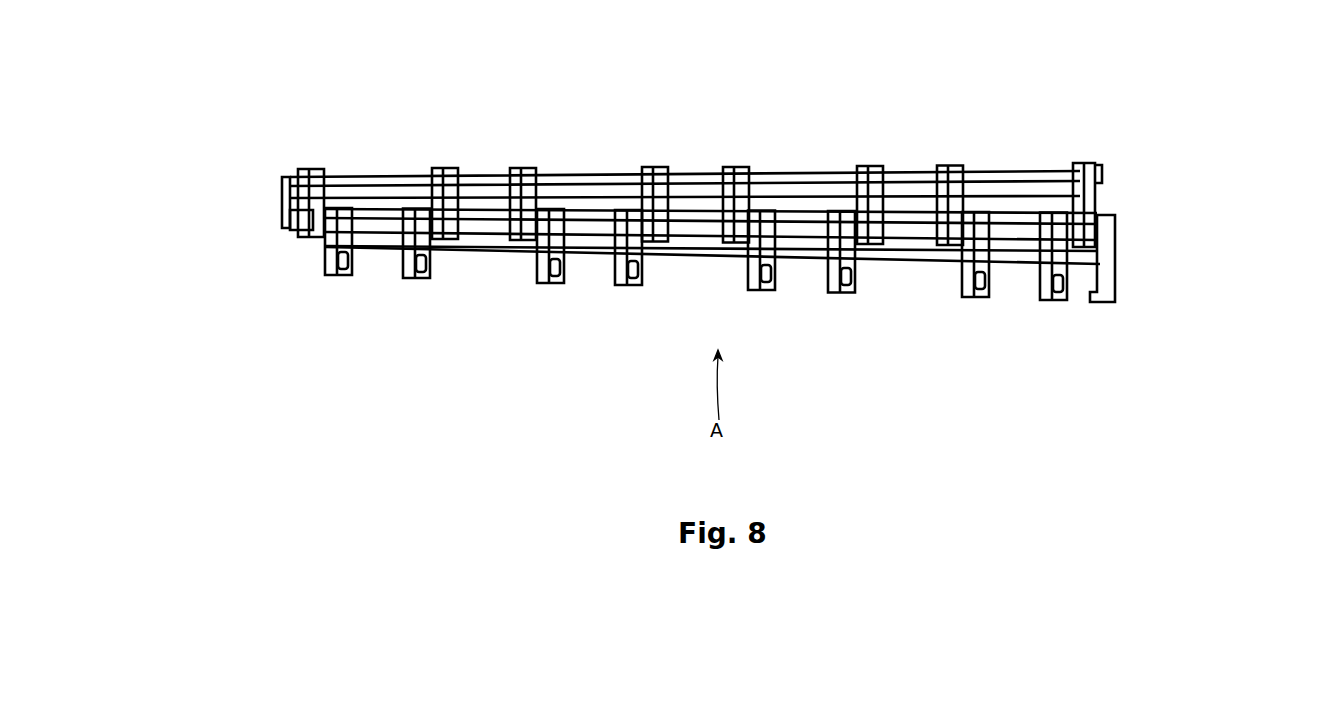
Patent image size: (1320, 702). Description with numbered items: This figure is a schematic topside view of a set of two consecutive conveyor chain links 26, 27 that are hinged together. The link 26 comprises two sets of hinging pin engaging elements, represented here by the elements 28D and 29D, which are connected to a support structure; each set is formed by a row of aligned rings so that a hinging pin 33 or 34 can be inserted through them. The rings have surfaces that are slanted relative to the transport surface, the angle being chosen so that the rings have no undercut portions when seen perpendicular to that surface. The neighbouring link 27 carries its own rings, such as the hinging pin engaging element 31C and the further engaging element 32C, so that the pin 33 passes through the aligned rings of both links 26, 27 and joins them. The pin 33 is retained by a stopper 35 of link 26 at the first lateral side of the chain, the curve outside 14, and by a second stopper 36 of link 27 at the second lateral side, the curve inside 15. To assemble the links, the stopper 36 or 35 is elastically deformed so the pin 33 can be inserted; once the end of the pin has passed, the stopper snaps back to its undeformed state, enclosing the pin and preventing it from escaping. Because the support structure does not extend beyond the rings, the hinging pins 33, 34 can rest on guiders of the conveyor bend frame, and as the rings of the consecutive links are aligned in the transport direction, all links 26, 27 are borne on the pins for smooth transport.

The curve outside 14 is at (1207, 211).
The curve inside 15 is at (200, 206).
The link 26 is at (921, 258).
The link 27 is at (1044, 205).
The hinging pin engaging element 28D is at (620, 284).
The hinging pin engaging element 29D is at (638, 224).
The hinging pin engaging element 31C is at (534, 222).
The upper terminal 32C is at (522, 176).
The hinging pin 33 is at (301, 225).
The hinging pin 34 is at (1020, 177).
The stopper 35 is at (1116, 240).
The second stopper 36 is at (284, 196).